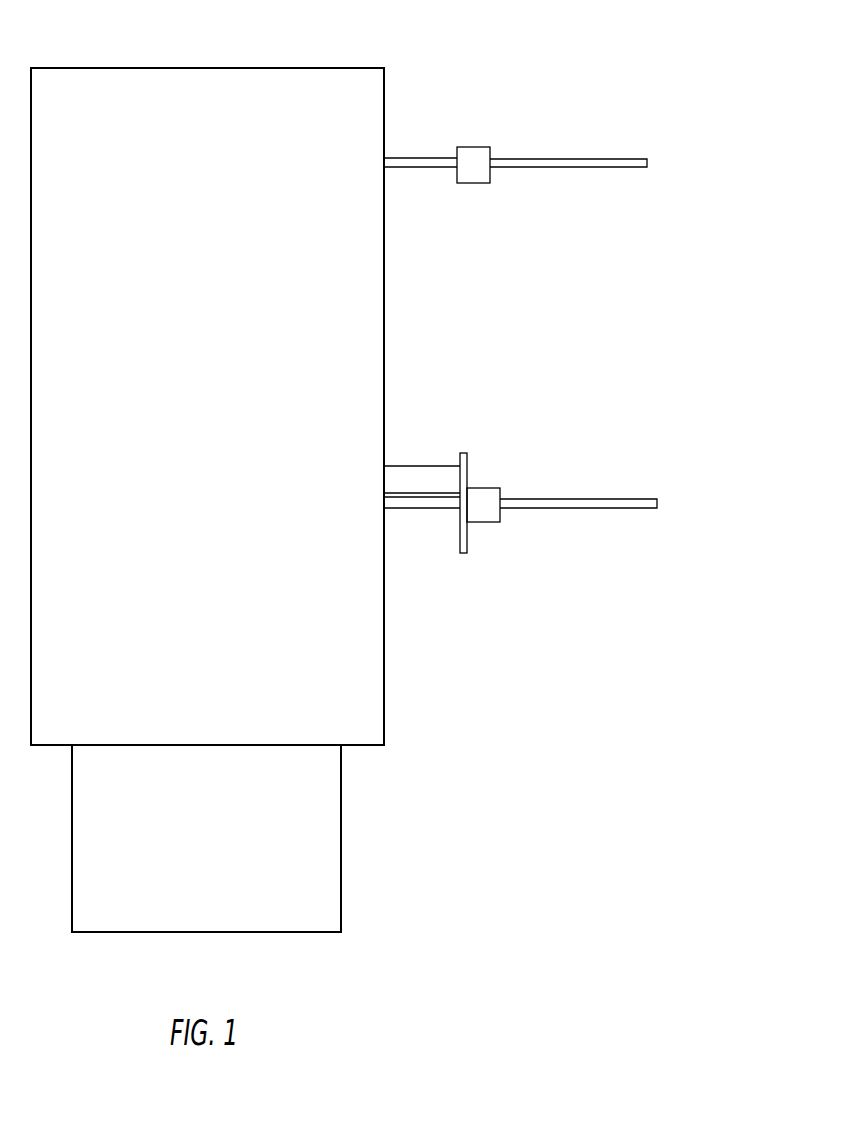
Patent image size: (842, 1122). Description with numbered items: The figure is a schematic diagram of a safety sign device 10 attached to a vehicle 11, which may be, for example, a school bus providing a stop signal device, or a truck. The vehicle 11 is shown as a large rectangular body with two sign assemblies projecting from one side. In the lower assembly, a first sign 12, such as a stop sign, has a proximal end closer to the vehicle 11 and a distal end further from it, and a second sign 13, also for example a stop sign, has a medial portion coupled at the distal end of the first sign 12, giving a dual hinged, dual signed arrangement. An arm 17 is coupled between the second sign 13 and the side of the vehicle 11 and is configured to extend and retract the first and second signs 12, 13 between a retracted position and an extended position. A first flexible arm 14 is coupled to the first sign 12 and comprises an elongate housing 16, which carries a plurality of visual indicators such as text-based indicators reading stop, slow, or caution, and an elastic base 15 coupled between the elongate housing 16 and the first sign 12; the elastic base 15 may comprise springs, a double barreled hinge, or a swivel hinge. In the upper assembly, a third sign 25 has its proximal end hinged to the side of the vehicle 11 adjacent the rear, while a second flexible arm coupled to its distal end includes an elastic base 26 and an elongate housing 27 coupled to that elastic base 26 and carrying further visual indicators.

The safety sign device 10 is at (617, 93).
The vehicle 11 is at (343, 79).
The first sign 12 is at (423, 508).
The second sign 13 is at (470, 460).
The first flexible arm 14 is at (557, 489).
The elastic base 15 is at (487, 517).
The elongate housing 16 is at (645, 503).
The arm 17 is at (430, 470).
The third sign 25 is at (438, 155).
The elastic base 26 is at (475, 172).
The elongate housing 27 is at (602, 163).